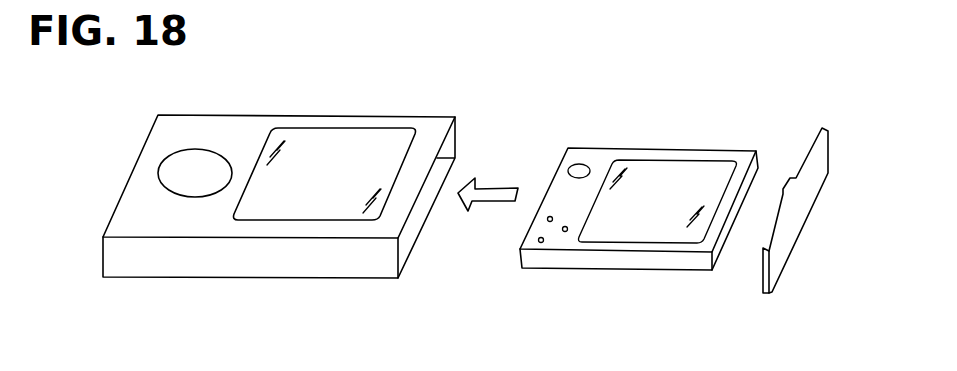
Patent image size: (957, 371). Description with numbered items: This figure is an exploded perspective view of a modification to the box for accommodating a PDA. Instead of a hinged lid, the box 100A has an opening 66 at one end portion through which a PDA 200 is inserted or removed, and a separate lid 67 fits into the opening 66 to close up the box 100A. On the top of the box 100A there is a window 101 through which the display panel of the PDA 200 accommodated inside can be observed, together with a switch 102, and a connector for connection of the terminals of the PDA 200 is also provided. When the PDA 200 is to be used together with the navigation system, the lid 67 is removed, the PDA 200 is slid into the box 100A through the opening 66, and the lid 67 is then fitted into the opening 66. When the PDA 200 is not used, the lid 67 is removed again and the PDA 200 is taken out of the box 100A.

The box 100A is at (282, 252).
The window 101 is at (330, 148).
The switch 102 is at (192, 183).
The opening 66 is at (415, 225).
The PDA 200 is at (605, 262).
The lid 67 is at (785, 247).